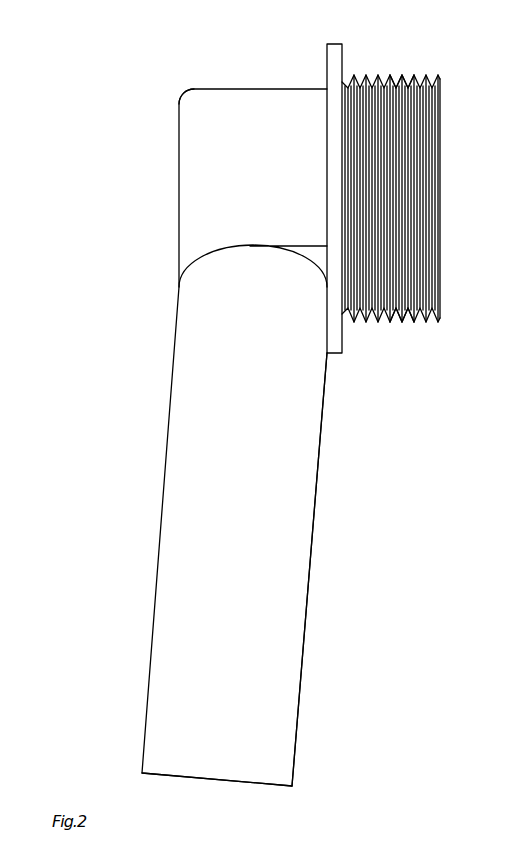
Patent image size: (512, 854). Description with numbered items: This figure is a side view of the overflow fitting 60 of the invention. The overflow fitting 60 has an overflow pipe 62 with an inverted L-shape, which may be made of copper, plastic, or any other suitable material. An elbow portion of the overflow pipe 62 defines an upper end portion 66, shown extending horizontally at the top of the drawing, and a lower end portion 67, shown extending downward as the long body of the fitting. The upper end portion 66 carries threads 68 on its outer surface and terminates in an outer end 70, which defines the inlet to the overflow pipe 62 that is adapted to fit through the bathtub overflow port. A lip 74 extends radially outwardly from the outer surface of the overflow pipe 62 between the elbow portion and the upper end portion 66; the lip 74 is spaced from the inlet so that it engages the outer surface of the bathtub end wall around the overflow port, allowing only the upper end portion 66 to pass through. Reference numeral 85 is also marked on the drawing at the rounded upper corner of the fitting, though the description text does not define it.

The overflow fitting 60 is at (347, 517).
The overflow pipe 62 is at (298, 605).
The upper end portion 66 is at (403, 330).
The lower end portion 67 is at (332, 450).
The threads 68 is at (402, 78).
The outer end 70 is at (440, 262).
The lip 74 is at (330, 58).
The rounded upper corner of handle 85 is at (189, 91).